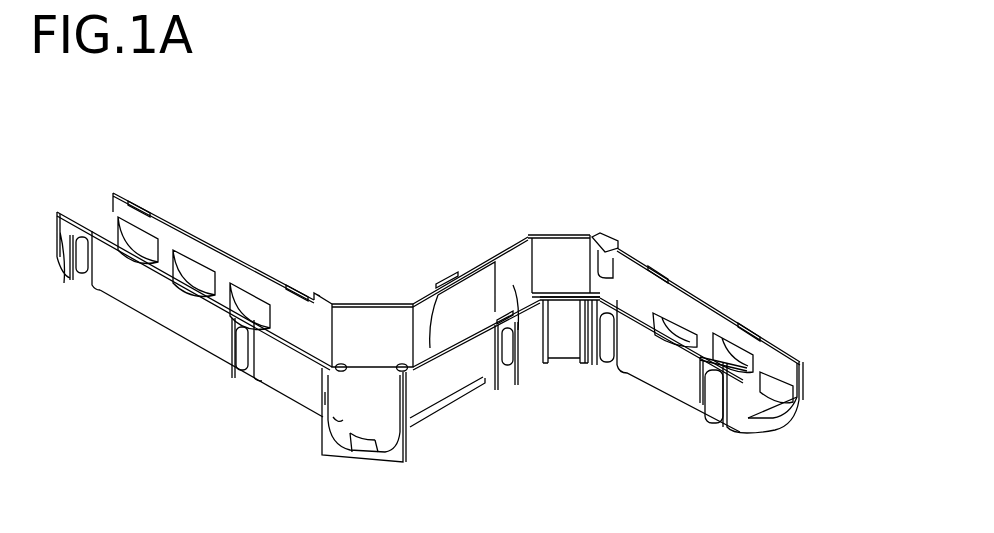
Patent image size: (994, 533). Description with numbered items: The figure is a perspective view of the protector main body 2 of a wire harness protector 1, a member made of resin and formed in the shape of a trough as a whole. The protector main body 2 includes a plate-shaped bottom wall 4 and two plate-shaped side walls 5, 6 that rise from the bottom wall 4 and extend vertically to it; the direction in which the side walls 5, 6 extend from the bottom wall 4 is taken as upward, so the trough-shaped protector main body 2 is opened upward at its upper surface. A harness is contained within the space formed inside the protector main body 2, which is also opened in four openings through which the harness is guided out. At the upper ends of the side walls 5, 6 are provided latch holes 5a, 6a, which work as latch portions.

The wire harness protector / bracket 1 is at (724, 205).
The protector main body 2 is at (398, 303).
The bottom wall 4 is at (772, 423).
The side wall 5 is at (162, 300).
The latch hole 5a is at (78, 280).
The side wall 6 is at (505, 248).
The latch hole 6a is at (133, 198).